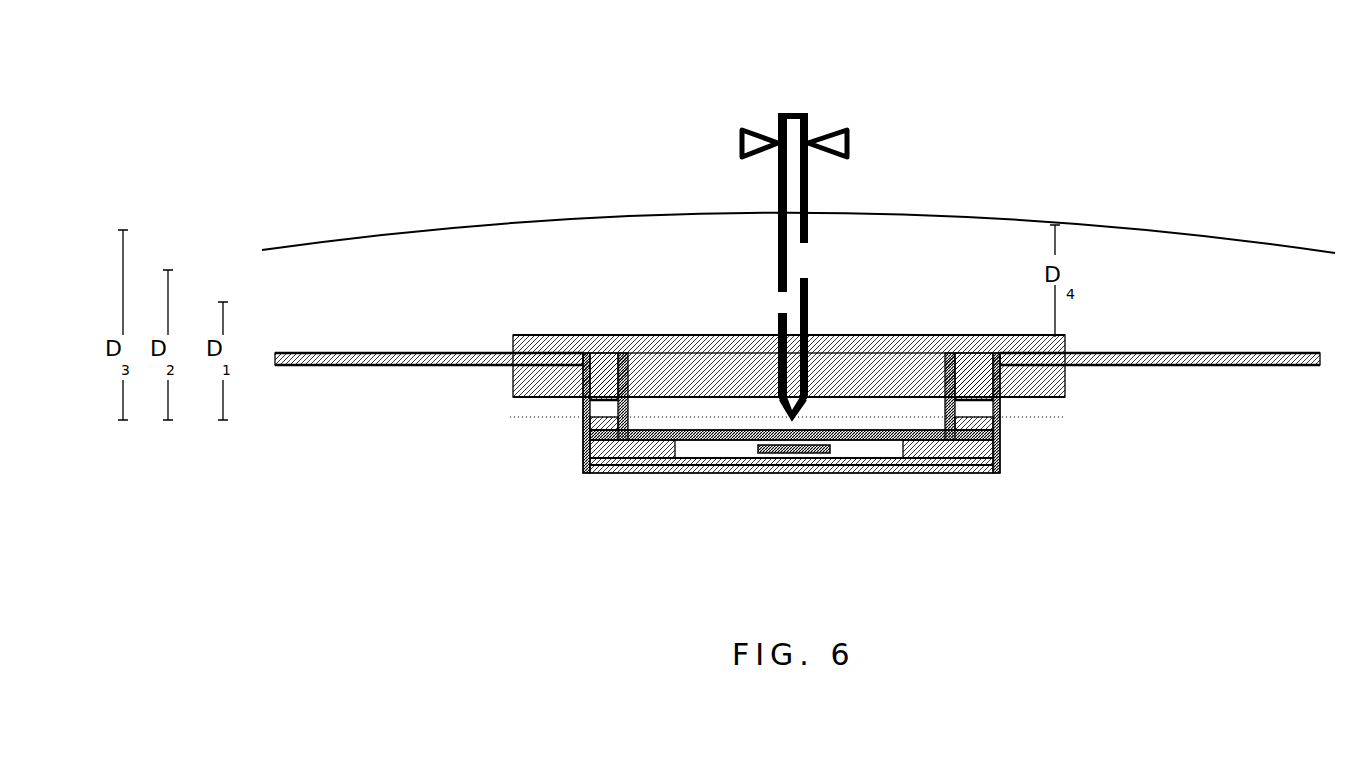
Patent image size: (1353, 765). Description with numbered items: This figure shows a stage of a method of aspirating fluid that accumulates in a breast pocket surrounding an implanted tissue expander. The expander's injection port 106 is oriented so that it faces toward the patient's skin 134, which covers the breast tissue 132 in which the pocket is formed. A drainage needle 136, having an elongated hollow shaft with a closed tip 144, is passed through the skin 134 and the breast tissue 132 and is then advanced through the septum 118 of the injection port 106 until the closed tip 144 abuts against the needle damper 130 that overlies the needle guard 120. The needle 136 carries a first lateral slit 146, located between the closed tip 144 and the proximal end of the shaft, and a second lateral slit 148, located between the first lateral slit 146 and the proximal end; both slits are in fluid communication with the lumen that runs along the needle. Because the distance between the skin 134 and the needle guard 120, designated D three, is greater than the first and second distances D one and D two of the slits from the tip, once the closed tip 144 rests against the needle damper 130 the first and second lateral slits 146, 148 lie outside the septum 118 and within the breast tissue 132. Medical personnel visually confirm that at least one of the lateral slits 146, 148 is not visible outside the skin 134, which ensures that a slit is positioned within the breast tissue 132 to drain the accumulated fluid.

The injection port 106 is at (663, 312).
The septum 118 is at (822, 327).
The needle guard 120 is at (848, 442).
The needle damper 130 is at (910, 420).
The breast tissue 132 is at (460, 301).
The skin 134 is at (1173, 230).
The drainage needle 136 is at (777, 279).
The closed tip 144 is at (790, 412).
The first lateral slit 146 is at (775, 300).
The second lateral slit 148 is at (808, 262).